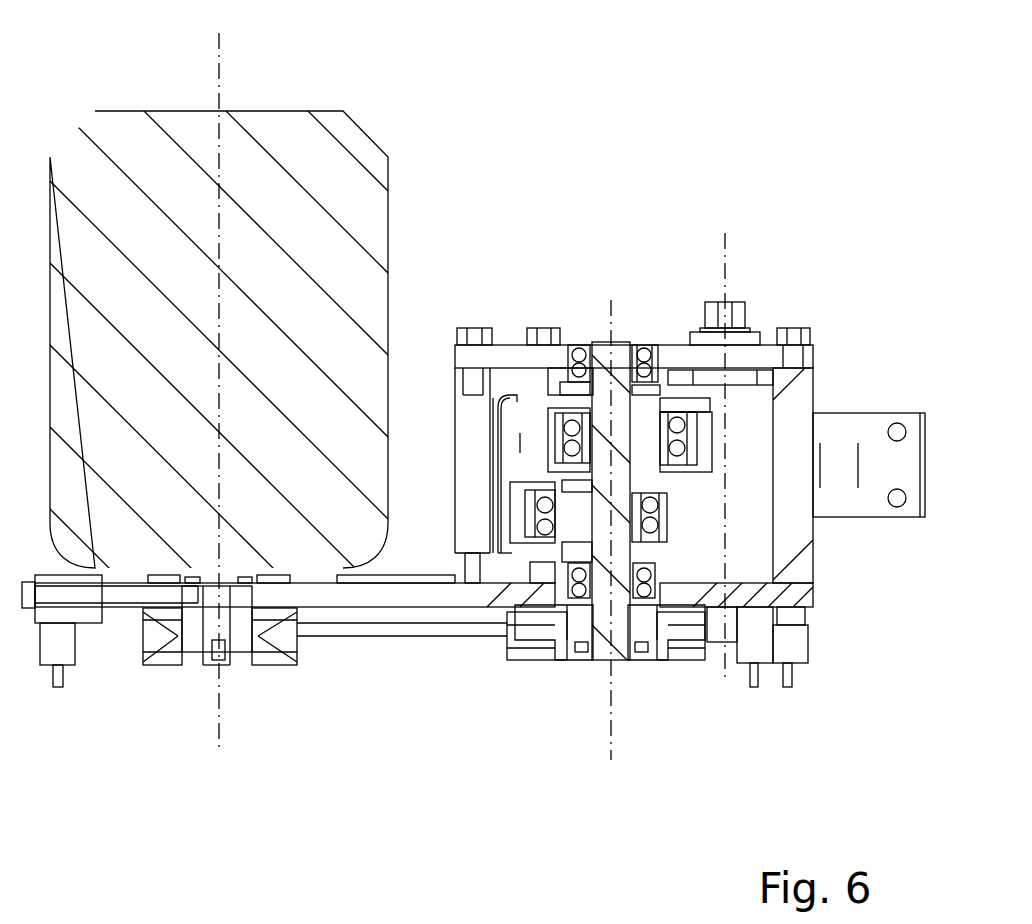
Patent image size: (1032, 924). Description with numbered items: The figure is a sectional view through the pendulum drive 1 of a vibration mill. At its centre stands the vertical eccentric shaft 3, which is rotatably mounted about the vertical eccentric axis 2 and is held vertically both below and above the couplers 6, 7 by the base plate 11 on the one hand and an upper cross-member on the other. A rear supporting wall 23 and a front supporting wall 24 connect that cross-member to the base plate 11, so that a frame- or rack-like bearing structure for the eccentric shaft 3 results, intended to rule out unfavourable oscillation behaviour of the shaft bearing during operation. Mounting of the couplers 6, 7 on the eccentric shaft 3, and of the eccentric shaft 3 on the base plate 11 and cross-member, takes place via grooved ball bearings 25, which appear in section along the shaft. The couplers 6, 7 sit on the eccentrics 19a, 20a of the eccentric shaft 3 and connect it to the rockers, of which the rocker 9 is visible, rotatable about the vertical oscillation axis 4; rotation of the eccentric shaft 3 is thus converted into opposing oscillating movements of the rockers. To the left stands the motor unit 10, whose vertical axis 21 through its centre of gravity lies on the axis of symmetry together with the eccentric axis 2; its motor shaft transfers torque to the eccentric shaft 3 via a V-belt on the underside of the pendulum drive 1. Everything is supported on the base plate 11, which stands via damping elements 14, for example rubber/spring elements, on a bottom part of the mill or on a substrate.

The pendulum drive 1 is at (770, 113).
The eccentric axis 2 is at (611, 733).
The eccentric shaft 3 is at (605, 400).
The oscillation axis 4 is at (764, 438).
The coupler 6 is at (520, 512).
The coupler 7 is at (540, 437).
The rocker 9 is at (870, 442).
The motor unit 10 is at (140, 205).
The base plate 11 is at (790, 595).
The damping elements 14 is at (58, 650).
The eccentric 19a is at (582, 520).
The eccentric 20a is at (642, 423).
The vertical axis 21 is at (222, 42).
The rear supporting wall 23 is at (465, 430).
The front supporting wall 24 is at (790, 395).
The grooved ball bearings 25 is at (560, 425).